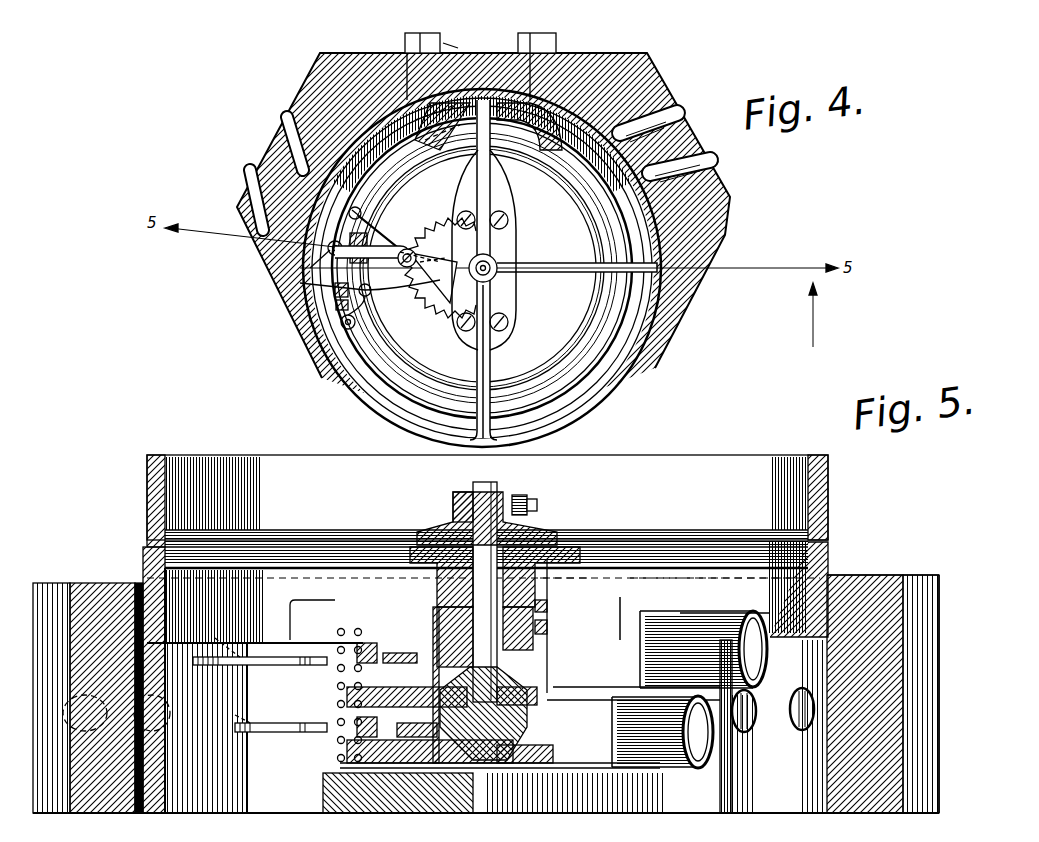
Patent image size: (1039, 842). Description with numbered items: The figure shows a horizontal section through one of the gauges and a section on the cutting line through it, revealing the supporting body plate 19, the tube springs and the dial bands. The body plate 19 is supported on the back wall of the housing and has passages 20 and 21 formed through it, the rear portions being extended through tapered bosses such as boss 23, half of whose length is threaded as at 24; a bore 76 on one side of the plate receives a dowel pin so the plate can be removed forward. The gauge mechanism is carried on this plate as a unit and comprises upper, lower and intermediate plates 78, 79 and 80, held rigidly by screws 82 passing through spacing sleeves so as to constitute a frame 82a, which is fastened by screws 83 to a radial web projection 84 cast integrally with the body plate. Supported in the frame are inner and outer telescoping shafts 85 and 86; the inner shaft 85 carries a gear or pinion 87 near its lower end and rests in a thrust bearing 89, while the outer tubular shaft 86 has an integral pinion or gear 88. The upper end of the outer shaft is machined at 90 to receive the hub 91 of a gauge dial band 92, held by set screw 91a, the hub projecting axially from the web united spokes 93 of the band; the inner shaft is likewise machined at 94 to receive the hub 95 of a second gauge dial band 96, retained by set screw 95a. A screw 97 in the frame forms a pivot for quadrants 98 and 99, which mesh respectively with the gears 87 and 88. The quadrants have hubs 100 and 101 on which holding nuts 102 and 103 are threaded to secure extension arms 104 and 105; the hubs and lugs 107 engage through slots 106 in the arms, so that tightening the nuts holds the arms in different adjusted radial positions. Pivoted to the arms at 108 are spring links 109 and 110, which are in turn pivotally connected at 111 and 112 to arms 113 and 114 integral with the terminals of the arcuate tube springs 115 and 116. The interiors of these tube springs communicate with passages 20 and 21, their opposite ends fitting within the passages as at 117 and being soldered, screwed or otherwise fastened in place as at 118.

In FIG. 4, the body plate 19 is at (652, 62).
In FIG. 5, the body plate 19 is at (130, 597).
In FIG. 4, the passage 20 is at (609, 43).
In FIG. 4, the passage 21 is at (430, 95).
In FIG. 4, the boss 23 is at (461, 43).
In FIG. 4, the threaded portion 24 is at (553, 50).
In FIG. 4, the bore 76 is at (288, 185).
In FIG. 4, the upper plate 78 is at (445, 310).
In FIG. 5, the upper plate 78 is at (633, 626).
In FIG. 4, the lower plate 79 is at (505, 250).
In FIG. 5, the lower plate 79 is at (560, 745).
In FIG. 4, the intermediate plate 80 is at (495, 210).
In FIG. 5, the intermediate plate 80 is at (537, 695).
In FIG. 4, the screw 82 is at (508, 320).
In FIG. 5, the screw 82 is at (350, 637).
In FIG. 4, the frame 82a is at (500, 262).
In FIG. 5, the frame 82a is at (425, 610).
In FIG. 4, the screw 83 is at (510, 235).
In FIG. 4, the radial web projection 84 is at (508, 218).
In FIG. 5, the radial web projection 84 is at (473, 800).
In FIG. 4, the inner shaft 85 is at (520, 272).
In FIG. 5, the inner shaft 85 is at (510, 540).
In FIG. 5, the outer tubular shaft 86 is at (547, 606).
In FIG. 4, the gear or pinion 87 is at (505, 300).
In FIG. 5, the gear or pinion 87 is at (527, 715).
In FIG. 4, the pinion or gear 88 is at (470, 330).
In FIG. 5, the pinion or gear 88 is at (547, 628).
In FIG. 5, the thrust bearing 89 is at (553, 755).
In FIG. 4, the machined portion 90 is at (500, 215).
In FIG. 5, the machined portion 90 is at (462, 537).
In FIG. 5, the hub 91 is at (410, 585).
In FIG. 4, the set screw 91a is at (540, 283).
In FIG. 5, the set screw 91a is at (670, 578).
In FIG. 4, the gauge dial band 92 is at (600, 422).
In FIG. 5, the gauge dial band 92 is at (818, 555).
In FIG. 4, the spokes 93 is at (705, 260).
In FIG. 5, the spokes 93 is at (672, 540).
In FIG. 4, the machined portion 94 is at (492, 185).
In FIG. 5, the machined portion 94 is at (497, 495).
In FIG. 4, the hub 95 is at (460, 250).
In FIG. 5, the hub 95 is at (462, 492).
In FIG. 4, the set screw 95a is at (590, 233).
In FIG. 5, the set screw 95a is at (537, 505).
In FIG. 4, the gauge dial band 96 is at (575, 390).
In FIG. 5, the gauge dial band 96 is at (818, 482).
In FIG. 4, the screw 97 is at (405, 249).
In FIG. 5, the screw 97 is at (365, 640).
In FIG. 4, the quadrant 98 is at (372, 290).
In FIG. 5, the quadrant 98 is at (400, 735).
In FIG. 5, the quadrant 99 is at (420, 645).
In FIG. 5, the hub 100 is at (345, 755).
In FIG. 5, the hub 101 is at (340, 690).
In FIG. 5, the holding nut 102 is at (330, 725).
In FIG. 4, the holding nut 103 is at (330, 296).
In FIG. 5, the holding nut 103 is at (312, 620).
In FIG. 4, the extension arm 104 is at (405, 245).
In FIG. 5, the extension arm 104 is at (300, 728).
In FIG. 5, the extension arm 105 is at (340, 665).
In FIG. 5, the slot 106 is at (310, 735).
In FIG. 4, the lug 107 is at (440, 238).
In FIG. 5, the lug 107 is at (385, 740).
In FIG. 4, the pivot 108 is at (340, 242).
In FIG. 5, the pivot 108 is at (228, 672).
In FIG. 4, the spring link 109 is at (365, 238).
In FIG. 5, the spring link 109 is at (350, 695).
In FIG. 4, the spring link 110 is at (356, 207).
In FIG. 4, the pivot 111 is at (341, 322).
In FIG. 4, the pivot 112 is at (340, 326).
In FIG. 4, the arm 113 is at (435, 300).
In FIG. 4, the arm 114 is at (355, 332).
In FIG. 4, the tube spring 115 is at (560, 355).
In FIG. 5, the tube spring 115 is at (710, 745).
In FIG. 4, the tube spring 116 is at (592, 405).
In FIG. 5, the tube spring 116 is at (748, 625).
In FIG. 4, the fitting 117 is at (525, 180).
In FIG. 5, the fitting 117 is at (660, 612).
In FIG. 4, the fastening 118 is at (545, 190).